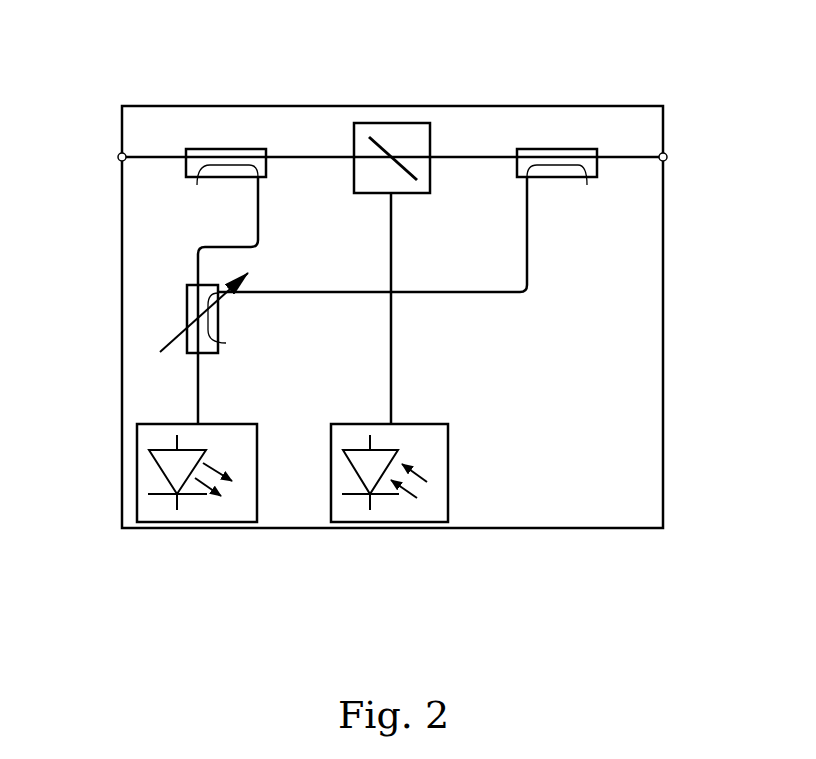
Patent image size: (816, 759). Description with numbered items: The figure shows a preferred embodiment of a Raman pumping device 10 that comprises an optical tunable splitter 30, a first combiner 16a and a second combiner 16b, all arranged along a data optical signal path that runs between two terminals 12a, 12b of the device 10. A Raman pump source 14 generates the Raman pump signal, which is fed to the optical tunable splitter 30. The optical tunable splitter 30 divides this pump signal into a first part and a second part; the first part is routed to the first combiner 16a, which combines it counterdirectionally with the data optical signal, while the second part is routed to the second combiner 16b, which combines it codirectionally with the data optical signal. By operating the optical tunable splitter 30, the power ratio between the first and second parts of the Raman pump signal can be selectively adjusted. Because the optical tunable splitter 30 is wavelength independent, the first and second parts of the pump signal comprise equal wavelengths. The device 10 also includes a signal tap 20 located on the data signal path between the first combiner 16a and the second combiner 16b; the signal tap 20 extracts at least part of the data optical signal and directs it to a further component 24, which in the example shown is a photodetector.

The Raman pumping device 10 is at (390, 569).
The first terminal 12a is at (118, 155).
The second terminal 12b is at (668, 157).
The Raman pump source 14 is at (190, 523).
The first combiner 16a is at (228, 148).
The second combiner 16b is at (556, 149).
The signal tap 20 is at (390, 123).
The further component 24 is at (448, 505).
The optical tunable splitter 30 is at (187, 319).